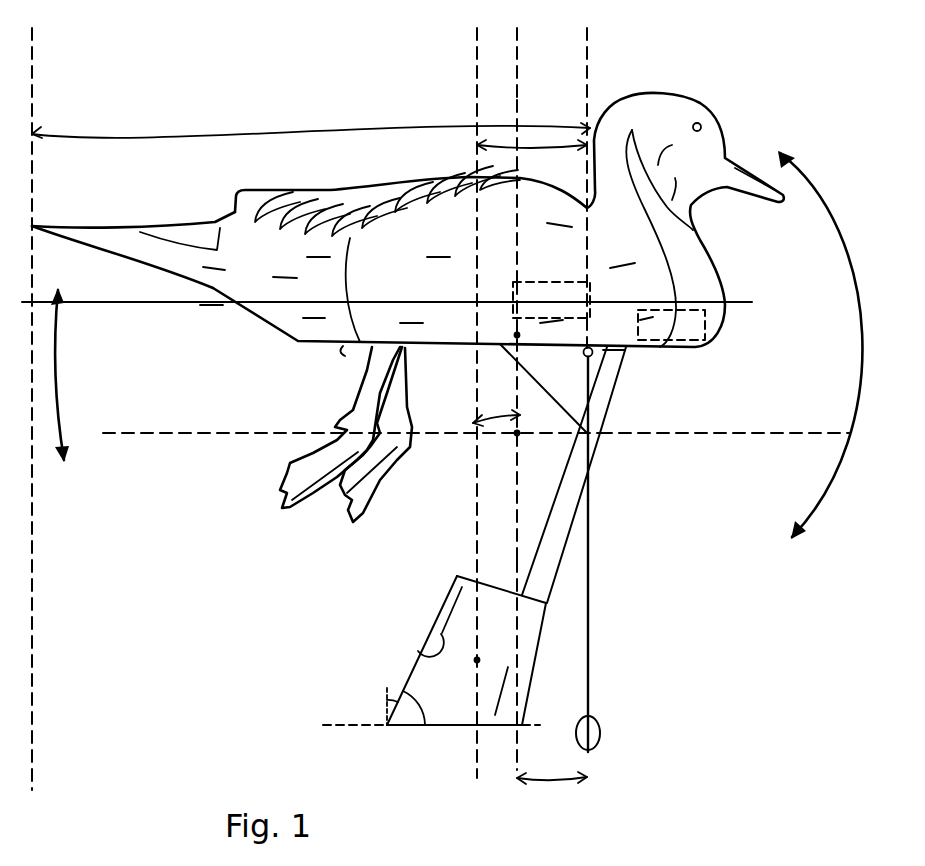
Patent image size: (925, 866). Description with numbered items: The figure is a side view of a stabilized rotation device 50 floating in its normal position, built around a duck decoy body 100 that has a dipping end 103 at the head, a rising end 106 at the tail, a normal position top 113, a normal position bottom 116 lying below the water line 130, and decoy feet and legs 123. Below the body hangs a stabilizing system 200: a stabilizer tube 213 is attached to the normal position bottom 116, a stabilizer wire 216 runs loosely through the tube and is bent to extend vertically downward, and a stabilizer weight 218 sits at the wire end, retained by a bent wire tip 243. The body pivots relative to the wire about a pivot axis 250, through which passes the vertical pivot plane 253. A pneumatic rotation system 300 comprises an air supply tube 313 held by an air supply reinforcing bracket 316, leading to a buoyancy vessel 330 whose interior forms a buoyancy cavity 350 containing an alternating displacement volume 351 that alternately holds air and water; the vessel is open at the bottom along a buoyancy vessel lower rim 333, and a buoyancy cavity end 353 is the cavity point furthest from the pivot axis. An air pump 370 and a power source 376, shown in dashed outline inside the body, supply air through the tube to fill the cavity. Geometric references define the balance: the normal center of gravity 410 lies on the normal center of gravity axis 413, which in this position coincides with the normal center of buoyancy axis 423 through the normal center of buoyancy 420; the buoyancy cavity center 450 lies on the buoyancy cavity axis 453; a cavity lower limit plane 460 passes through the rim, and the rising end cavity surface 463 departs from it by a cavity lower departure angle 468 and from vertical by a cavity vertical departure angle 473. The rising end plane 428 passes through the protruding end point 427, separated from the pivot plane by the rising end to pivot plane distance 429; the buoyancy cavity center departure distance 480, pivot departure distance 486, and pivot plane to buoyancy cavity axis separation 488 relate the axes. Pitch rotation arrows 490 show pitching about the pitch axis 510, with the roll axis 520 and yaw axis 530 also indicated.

The stabilized rotation device 50 is at (728, 310).
The duck decoy body 100 is at (725, 280).
The dipping end 103 is at (720, 250).
The rising end 106 is at (120, 258).
The normal position top 113 is at (432, 177).
The normal position bottom 116 is at (345, 346).
The decoy feet and legs 123 is at (348, 408).
The water line 130 is at (178, 302).
The stabilizing system 200 is at (588, 497).
The stabilizer tube 213 is at (586, 349).
The stabilizer wire 216 is at (588, 540).
The stabilizer weight 218 is at (600, 728).
The wire tip 243 is at (600, 744).
The pivot axis 250 is at (590, 347).
The pivot plane 253 is at (587, 80).
The pneumatic rotation system 300 is at (612, 398).
The air supply tube 313 is at (623, 360).
The air supply reinforcing bracket 316 is at (572, 377).
The buoyancy vessel 330 is at (533, 660).
The buoyancy vessel lower rim 333 is at (425, 726).
The buoyancy cavity 350 is at (470, 726).
The alternating displacement volume 351 is at (502, 726).
The buoyancy cavity end 353 is at (390, 725).
The air pump 370 is at (570, 282).
The power source 376 is at (668, 310).
The normal center of gravity 410 is at (517, 434).
The normal center of gravity axis 413 is at (517, 68).
The normal center of buoyancy 420 is at (515, 335).
The normal center of buoyancy axis 423 is at (517, 117).
The protruding end point 427 is at (32, 226).
The rising end plane 428 is at (32, 187).
The rising end to pivot plane distance 429 is at (176, 142).
The buoyancy cavity center 450 is at (477, 660).
The buoyancy cavity axis 453 is at (477, 510).
The cavity lower limit plane 460 is at (372, 724).
The rising end cavity surface 463 is at (422, 640).
The cavity lower departure angle 468 is at (440, 712).
The cavity vertical departure angle 473 is at (392, 700).
The buoyancy cavity center departure distance 480 is at (496, 413).
The pivot departure distance 486 is at (556, 779).
The pivot plane to buoyancy cavity axis separation 488 is at (555, 148).
The pitch rotation arrows 490 is at (57, 422).
The pitch axis 510 is at (520, 440).
The roll axis 520 is at (688, 433).
The yaw axis 530 is at (545, 500).